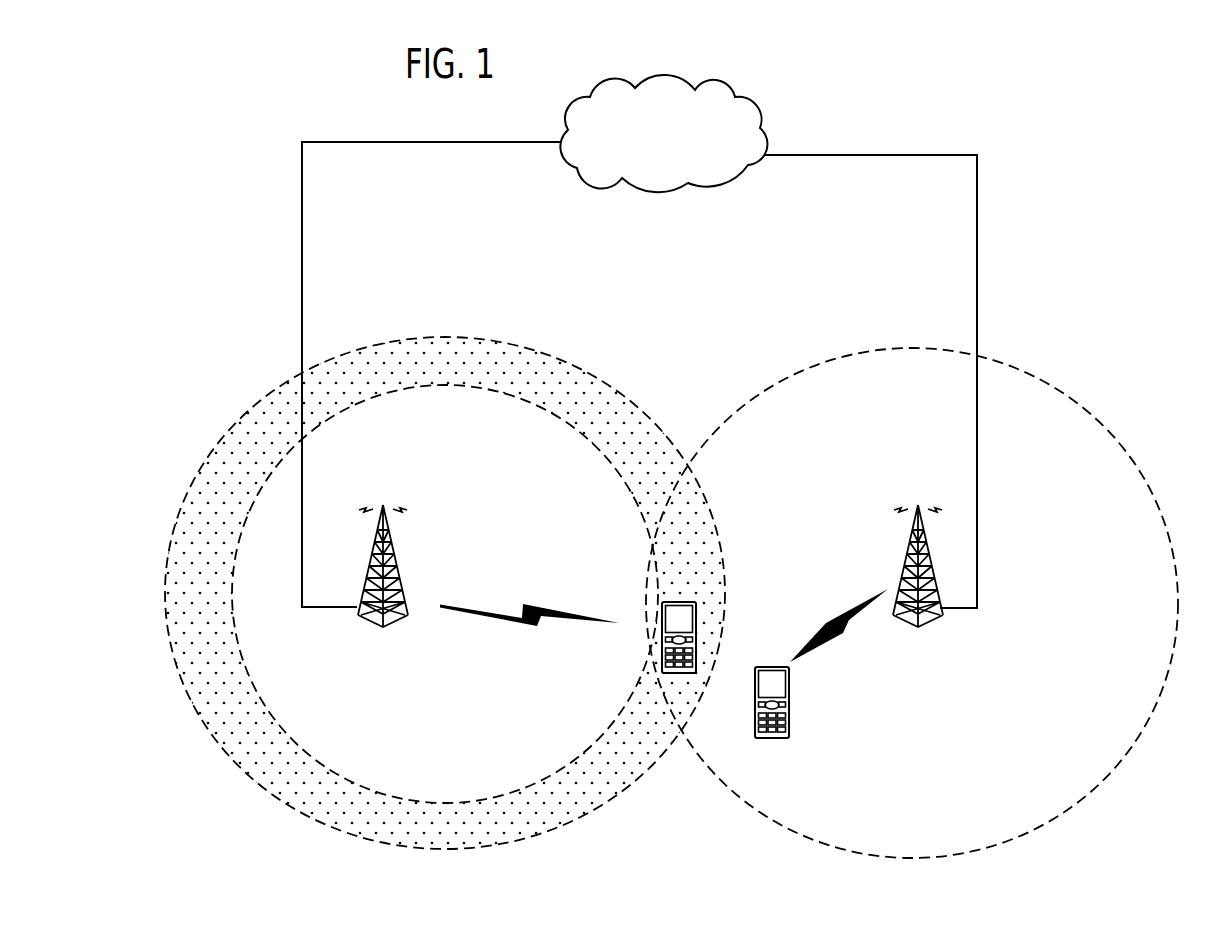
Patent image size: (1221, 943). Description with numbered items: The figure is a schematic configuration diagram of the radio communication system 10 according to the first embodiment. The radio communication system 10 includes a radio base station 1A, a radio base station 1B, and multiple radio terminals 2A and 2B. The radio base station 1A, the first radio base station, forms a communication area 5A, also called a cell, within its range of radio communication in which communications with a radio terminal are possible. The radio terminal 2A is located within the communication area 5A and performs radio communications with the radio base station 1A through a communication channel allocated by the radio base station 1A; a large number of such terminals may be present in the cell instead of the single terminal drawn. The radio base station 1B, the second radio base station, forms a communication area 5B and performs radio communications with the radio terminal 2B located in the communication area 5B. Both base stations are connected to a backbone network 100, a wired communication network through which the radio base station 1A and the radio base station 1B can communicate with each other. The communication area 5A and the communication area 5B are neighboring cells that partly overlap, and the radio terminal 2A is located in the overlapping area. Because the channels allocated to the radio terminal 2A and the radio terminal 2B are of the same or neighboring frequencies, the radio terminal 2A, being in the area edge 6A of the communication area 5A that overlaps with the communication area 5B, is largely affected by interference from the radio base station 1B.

The radio communication system 10 is at (1023, 107).
The backbone network 100 is at (745, 97).
The radio base station 1A is at (399, 578).
The radio base station 1B is at (903, 553).
The radio terminal 2A is at (697, 619).
The radio terminal 2B is at (790, 692).
The communication area 5A is at (602, 382).
The communication area 5B is at (1047, 384).
The area edge 6A is at (503, 357).